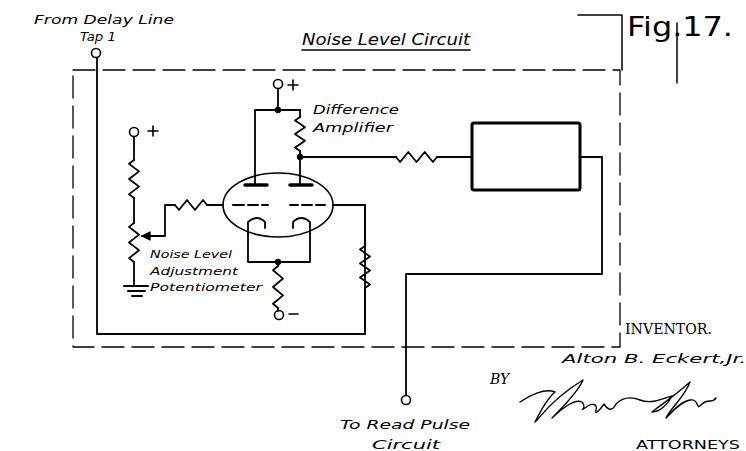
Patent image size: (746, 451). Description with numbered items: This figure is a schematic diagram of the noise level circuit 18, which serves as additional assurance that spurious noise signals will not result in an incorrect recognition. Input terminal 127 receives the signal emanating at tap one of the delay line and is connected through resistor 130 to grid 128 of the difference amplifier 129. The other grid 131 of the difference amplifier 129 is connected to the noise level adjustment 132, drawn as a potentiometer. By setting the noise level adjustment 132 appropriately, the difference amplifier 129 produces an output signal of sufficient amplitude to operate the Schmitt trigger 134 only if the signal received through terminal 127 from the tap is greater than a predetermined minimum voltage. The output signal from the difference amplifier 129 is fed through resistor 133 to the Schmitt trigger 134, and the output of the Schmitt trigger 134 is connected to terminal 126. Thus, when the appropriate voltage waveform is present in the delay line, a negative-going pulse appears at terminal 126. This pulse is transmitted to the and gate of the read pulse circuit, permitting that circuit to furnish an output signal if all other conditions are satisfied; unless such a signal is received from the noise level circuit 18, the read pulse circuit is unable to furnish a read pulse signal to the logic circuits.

The noise level circuit 18 is at (612, 133).
The terminal 126 is at (402, 398).
The terminal 127 is at (101, 53).
The grid 128 is at (318, 200).
The difference amplifier 129 is at (238, 179).
The resistor 130 is at (371, 258).
The grid 131 is at (237, 199).
The noise level adjustment 132 is at (131, 247).
The resistor 133 is at (407, 162).
The Schmitt trigger 134 is at (562, 126).